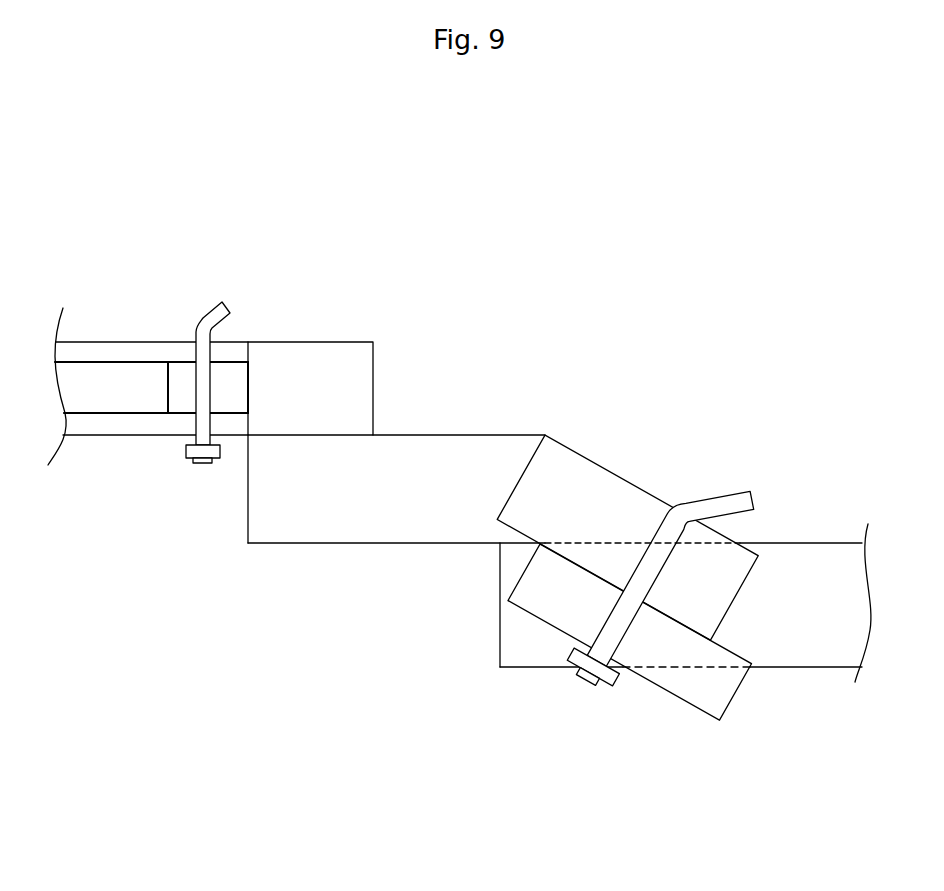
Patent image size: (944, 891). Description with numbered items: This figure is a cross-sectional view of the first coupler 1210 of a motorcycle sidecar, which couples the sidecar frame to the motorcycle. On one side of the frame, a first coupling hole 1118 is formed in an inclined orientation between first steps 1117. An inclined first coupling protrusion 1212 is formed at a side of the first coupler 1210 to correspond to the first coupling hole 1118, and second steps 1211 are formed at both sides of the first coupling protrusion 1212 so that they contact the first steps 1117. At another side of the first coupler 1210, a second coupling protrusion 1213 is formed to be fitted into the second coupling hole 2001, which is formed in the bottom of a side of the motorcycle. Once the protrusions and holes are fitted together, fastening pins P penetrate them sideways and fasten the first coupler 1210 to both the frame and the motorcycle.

The second coupling hole 2001 is at (128, 383).
The second coupling protrusion 1213 is at (227, 388).
The first coupler 1210 is at (403, 398).
The second steps 1211 is at (488, 452).
The first coupling protrusion 1212 is at (598, 495).
The first steps 1117 is at (513, 562).
The first coupling hole 1118 is at (747, 612).
The fastening pin P is at (200, 330).